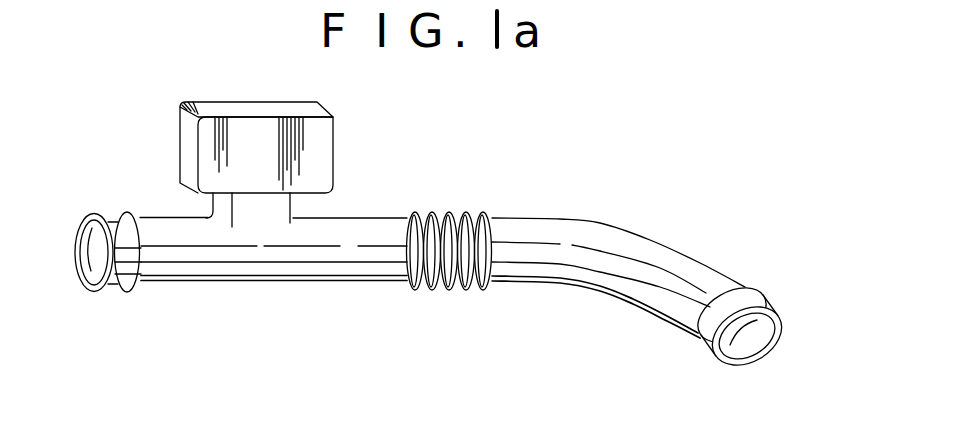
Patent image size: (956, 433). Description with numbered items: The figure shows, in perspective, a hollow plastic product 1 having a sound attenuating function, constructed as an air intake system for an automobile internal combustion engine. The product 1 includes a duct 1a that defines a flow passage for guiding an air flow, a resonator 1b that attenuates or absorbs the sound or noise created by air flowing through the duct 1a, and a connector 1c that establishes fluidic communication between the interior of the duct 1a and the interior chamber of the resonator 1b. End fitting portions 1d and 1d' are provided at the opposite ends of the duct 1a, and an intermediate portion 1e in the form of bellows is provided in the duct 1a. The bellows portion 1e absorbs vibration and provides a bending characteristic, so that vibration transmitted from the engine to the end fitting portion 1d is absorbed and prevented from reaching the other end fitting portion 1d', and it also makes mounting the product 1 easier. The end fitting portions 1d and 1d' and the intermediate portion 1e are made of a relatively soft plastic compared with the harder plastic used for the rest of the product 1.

The hollow plastic product 1 is at (537, 228).
The duct 1a is at (357, 263).
The resonator 1b is at (205, 150).
The connector 1c is at (285, 207).
The end fitting portion 1d is at (92, 234).
The end fitting portion 1d' is at (763, 327).
The intermediate portion 1e is at (480, 288).